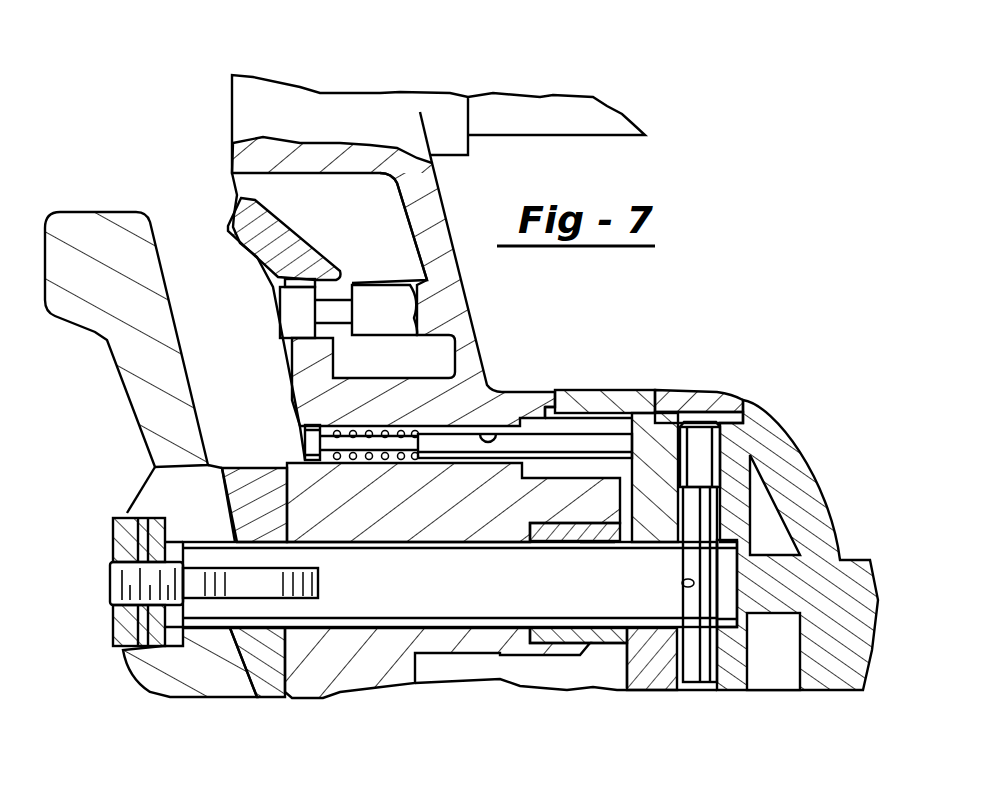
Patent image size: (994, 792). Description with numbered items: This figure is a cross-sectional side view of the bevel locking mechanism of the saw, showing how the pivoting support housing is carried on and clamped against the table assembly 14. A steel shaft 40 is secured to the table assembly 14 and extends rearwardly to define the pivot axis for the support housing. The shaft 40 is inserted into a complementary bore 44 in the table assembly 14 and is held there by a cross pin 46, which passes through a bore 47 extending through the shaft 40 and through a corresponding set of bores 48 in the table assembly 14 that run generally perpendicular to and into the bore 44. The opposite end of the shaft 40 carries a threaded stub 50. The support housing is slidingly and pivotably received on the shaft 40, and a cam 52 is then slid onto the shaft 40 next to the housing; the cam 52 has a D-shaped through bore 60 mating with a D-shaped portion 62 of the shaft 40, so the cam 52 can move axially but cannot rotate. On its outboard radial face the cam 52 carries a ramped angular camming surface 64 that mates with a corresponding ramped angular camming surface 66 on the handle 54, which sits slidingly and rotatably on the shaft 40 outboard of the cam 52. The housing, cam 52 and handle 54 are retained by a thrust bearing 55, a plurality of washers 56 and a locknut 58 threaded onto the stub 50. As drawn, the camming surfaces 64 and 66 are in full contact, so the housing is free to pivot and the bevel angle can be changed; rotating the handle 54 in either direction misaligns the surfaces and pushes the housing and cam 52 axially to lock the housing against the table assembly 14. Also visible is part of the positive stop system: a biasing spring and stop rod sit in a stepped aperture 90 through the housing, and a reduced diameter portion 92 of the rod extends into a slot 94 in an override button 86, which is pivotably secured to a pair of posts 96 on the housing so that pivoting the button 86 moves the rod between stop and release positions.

The table assembly 14 is at (788, 470).
The shaft 40 is at (520, 592).
The bore 44 is at (597, 545).
The cross pin 46 is at (700, 523).
The bore 47 is at (682, 583).
The bores 48 is at (712, 457).
The threaded stub 50 is at (112, 568).
The cam 52 is at (278, 468).
The handle 54 is at (95, 222).
The thrust bearing 55 is at (140, 663).
The washers 56 is at (138, 615).
The locknut 58 is at (112, 558).
The D-shaped through bore 60 is at (260, 543).
The D-shaped portion 62 is at (275, 589).
The angular camming surface 64 is at (225, 510).
The angular camming surface 66 is at (222, 483).
The override button 86 is at (262, 222).
The stepped aperture 90 is at (490, 432).
The reduced diameter portion 92 is at (362, 445).
The slot 94 is at (300, 430).
The posts 96 is at (393, 290).